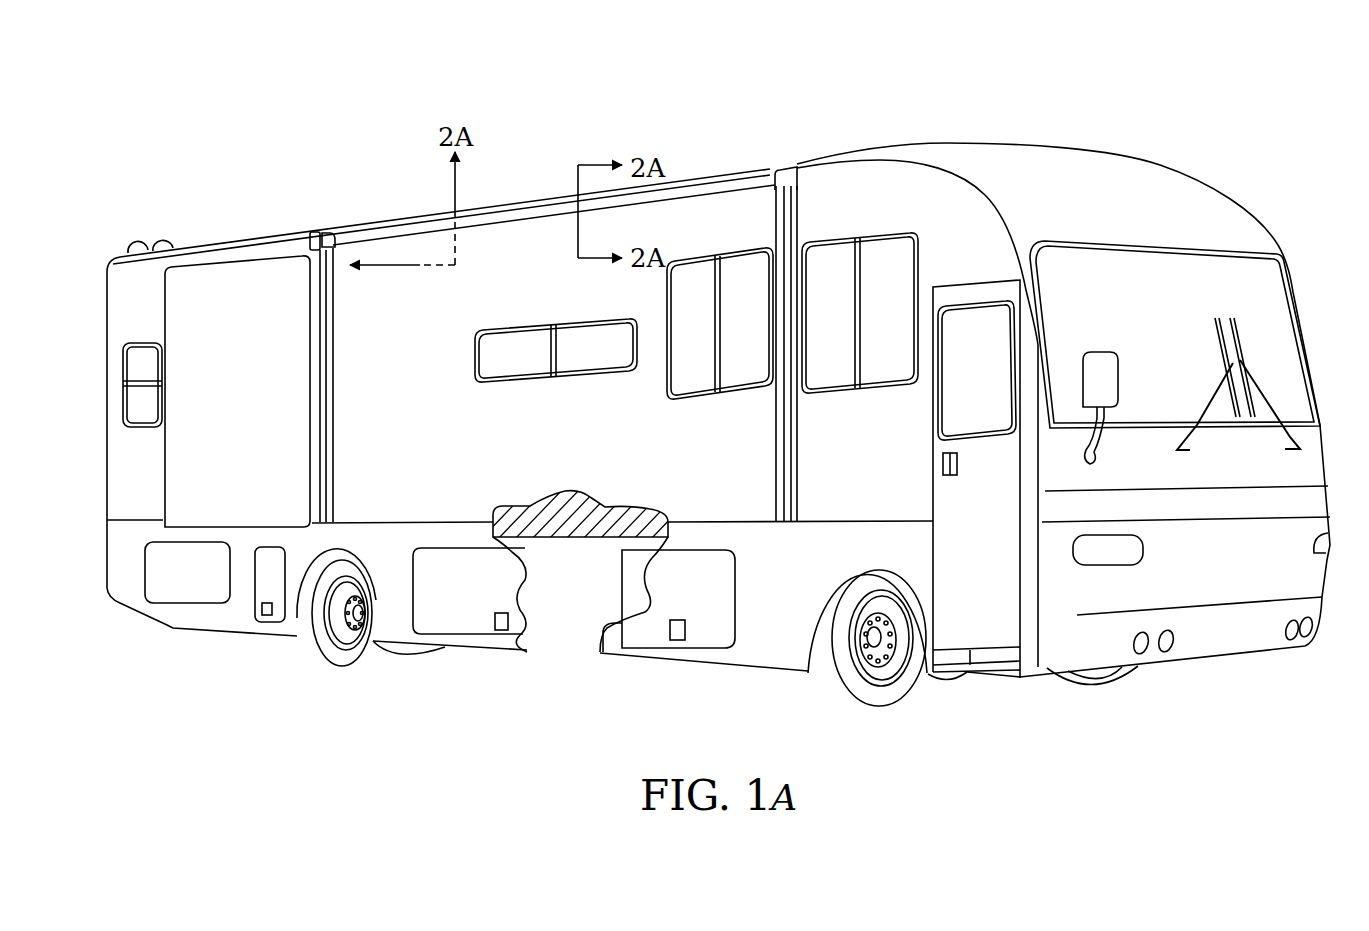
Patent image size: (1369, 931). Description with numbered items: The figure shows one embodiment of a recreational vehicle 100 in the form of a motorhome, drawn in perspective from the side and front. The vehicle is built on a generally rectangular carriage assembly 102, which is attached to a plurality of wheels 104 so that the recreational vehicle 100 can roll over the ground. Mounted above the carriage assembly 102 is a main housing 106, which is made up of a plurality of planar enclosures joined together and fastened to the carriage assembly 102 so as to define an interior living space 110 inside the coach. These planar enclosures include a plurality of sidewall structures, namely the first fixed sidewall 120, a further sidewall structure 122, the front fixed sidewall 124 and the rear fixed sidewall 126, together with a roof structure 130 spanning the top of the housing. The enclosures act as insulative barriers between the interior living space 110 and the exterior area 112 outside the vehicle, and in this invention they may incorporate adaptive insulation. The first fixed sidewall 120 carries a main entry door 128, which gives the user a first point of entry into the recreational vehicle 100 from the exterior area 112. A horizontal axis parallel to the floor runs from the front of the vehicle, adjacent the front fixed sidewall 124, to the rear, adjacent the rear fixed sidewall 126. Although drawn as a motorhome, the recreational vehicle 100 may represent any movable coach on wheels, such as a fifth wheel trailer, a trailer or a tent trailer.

The recreational vehicle 100 is at (1119, 115).
The carriage assembly 102 is at (570, 540).
The wheels 104 is at (340, 657).
The main housing 106 is at (522, 253).
The interior living space 110 is at (370, 325).
The exterior area 112 is at (1280, 158).
The first fixed sidewall 120 is at (723, 220).
The sidewall structure 122 is at (1302, 295).
The front fixed sidewall 124 is at (1228, 572).
The rear fixed sidewall 126 is at (96, 481).
The main entry door 128 is at (993, 635).
The roof structure 130 is at (782, 164).